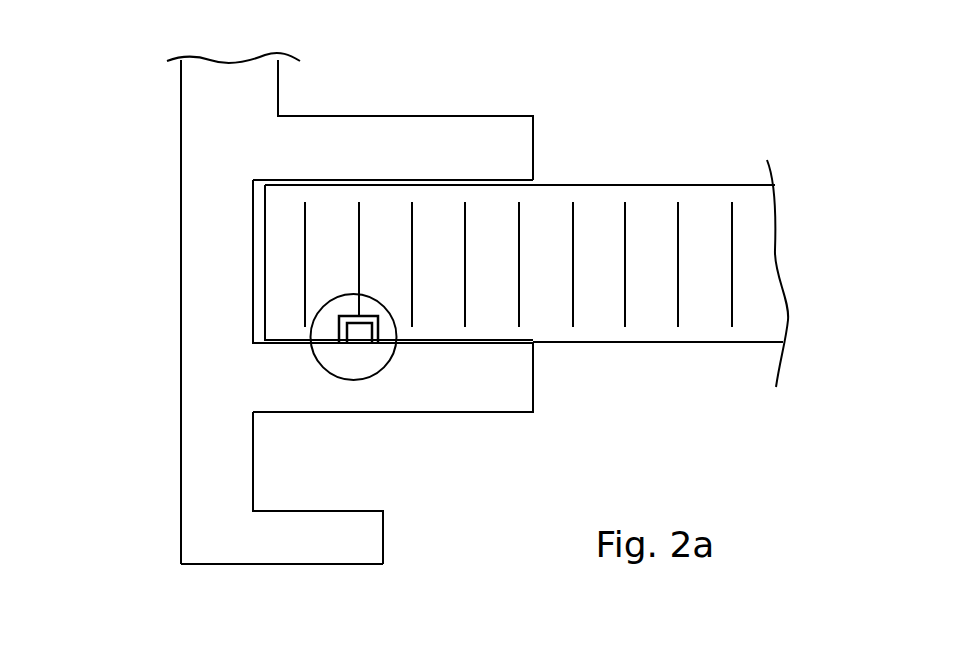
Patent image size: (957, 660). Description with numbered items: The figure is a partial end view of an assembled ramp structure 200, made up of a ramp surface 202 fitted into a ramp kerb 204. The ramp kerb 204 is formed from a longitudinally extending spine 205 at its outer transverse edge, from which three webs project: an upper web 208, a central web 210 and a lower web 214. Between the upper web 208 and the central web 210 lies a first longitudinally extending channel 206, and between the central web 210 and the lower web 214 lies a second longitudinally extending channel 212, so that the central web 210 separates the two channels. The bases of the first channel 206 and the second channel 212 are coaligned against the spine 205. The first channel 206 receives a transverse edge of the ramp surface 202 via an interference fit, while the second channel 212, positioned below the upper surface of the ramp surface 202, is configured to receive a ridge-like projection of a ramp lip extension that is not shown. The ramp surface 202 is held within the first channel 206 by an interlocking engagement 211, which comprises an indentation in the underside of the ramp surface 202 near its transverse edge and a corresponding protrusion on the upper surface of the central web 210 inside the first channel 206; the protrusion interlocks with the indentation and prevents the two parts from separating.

The ramp structure 200 is at (609, 121).
The ramp surface 202 is at (663, 343).
The ramp kerb 204 is at (163, 255).
The longitudinally extending spine 205 is at (181, 308).
The first longitudinally extending channel 206 is at (262, 219).
The upper web 208 is at (397, 152).
The central web 210 is at (413, 392).
The interlocking engagement 211 is at (317, 353).
The second longitudinally extending channel 212 is at (289, 477).
The lower web 214 is at (288, 542).